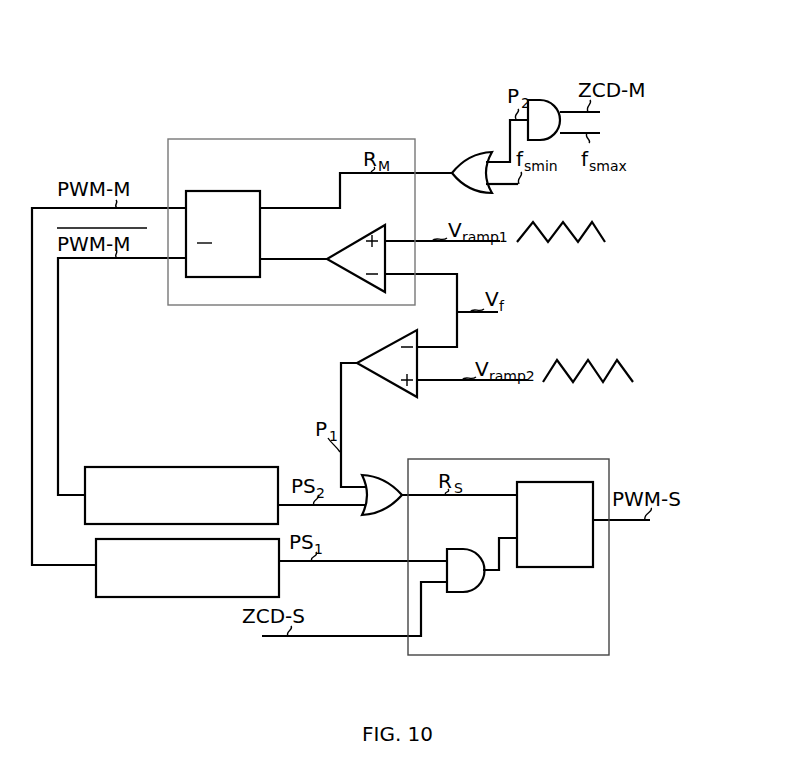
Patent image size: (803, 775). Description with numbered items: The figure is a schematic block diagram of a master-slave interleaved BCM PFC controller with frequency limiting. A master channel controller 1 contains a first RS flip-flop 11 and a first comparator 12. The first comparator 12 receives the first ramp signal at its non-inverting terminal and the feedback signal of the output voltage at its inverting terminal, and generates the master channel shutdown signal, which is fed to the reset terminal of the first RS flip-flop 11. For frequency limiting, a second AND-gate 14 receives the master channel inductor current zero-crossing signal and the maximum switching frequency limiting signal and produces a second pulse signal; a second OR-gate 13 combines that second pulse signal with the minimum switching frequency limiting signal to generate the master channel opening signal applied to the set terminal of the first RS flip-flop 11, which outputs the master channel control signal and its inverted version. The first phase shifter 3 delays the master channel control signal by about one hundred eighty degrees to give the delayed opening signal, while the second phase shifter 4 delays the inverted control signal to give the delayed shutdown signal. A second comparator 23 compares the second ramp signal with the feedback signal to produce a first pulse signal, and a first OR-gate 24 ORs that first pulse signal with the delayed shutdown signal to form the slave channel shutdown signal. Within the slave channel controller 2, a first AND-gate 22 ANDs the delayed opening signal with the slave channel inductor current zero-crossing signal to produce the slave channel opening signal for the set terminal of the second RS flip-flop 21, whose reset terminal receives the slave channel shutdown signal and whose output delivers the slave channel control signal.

The master channel controller 1 is at (333, 138).
The first RS flip-flop 11 is at (232, 190).
The first comparator 12 is at (373, 227).
The second OR-gate 13 is at (470, 152).
The second AND-gate 14 is at (540, 100).
The second comparator 23 is at (373, 348).
The first OR-gate 24 is at (378, 475).
The slave channel controller 2 is at (540, 656).
The second RS flip-flop 21 is at (553, 568).
The first AND-gate 22 is at (472, 583).
The first phase shifter 3 is at (187, 568).
The second phase shifter 4 is at (181, 495).